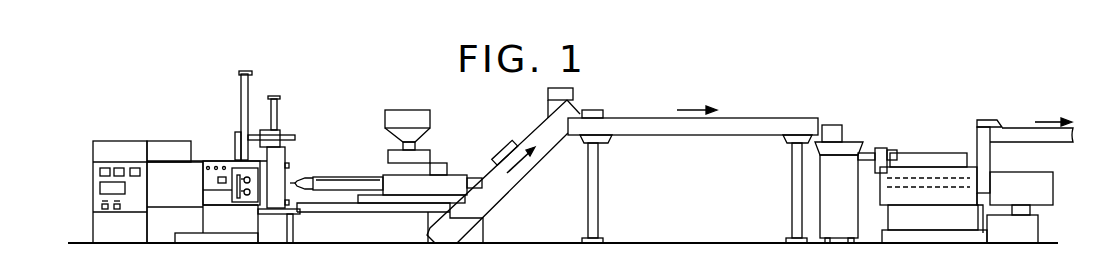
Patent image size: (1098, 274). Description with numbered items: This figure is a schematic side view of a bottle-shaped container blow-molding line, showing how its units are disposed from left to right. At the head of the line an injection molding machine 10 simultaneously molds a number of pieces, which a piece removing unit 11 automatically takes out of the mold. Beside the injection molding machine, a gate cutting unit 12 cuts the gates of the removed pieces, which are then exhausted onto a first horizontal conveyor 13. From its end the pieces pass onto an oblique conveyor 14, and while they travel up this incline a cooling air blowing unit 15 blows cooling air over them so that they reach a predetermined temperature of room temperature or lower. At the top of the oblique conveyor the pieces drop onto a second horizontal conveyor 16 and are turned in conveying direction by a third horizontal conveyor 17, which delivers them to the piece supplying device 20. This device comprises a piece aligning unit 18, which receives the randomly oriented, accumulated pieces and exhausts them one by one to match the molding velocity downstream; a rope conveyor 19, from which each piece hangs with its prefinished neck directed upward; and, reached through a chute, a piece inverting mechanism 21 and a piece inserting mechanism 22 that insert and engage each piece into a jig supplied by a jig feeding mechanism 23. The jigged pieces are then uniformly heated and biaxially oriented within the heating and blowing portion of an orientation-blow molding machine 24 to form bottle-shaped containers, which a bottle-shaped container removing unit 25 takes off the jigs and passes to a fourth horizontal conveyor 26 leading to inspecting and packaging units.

The injection molding machine 10 is at (175, 140).
The piece removing unit 11 is at (235, 143).
The gate cutting unit 12 is at (237, 205).
The first horizontal conveyor 13 is at (397, 212).
The oblique conveyor 14 is at (518, 175).
The cooling air blowing unit 15 is at (500, 150).
The second horizontal conveyor 16 is at (707, 136).
The third horizontal conveyor 17 is at (830, 125).
The piece aligning unit 18 is at (852, 147).
The rope conveyor 19 is at (870, 153).
The device for supplying pieces 20 is at (935, 86).
The piece inverting mechanism 21 is at (880, 148).
The piece inserting mechanism 22 is at (892, 150).
The jig feeding mechanism 23 is at (915, 180).
The orientation-blow molding machine 24 is at (942, 158).
The bottle-shaped container removing unit 25 is at (982, 142).
The fourth horizontal conveyor 26 is at (1025, 132).